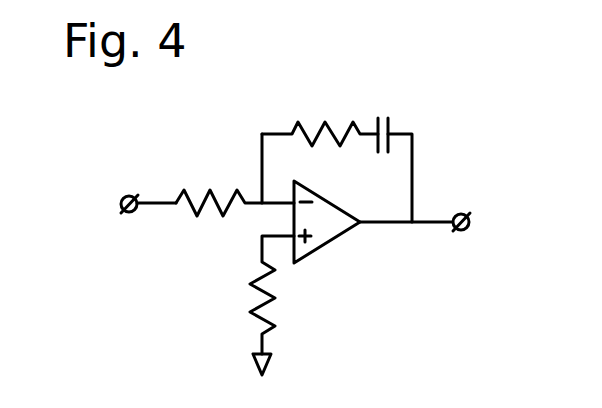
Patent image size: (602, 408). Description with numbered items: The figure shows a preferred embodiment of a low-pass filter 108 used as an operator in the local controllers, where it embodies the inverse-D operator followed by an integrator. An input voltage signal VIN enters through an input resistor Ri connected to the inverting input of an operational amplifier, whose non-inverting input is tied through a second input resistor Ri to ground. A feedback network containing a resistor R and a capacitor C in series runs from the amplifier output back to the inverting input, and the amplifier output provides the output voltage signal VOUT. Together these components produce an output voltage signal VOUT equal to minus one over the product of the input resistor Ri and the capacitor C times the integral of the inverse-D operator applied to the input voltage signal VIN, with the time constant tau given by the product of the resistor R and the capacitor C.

The low-pass filter 108 is at (512, 141).
The feedback resistor R is at (320, 145).
The capacitor C is at (392, 155).
The input resistor Ri is at (235, 264).
The input voltage signal VIN is at (120, 200).
The output voltage signal VOUT is at (459, 226).